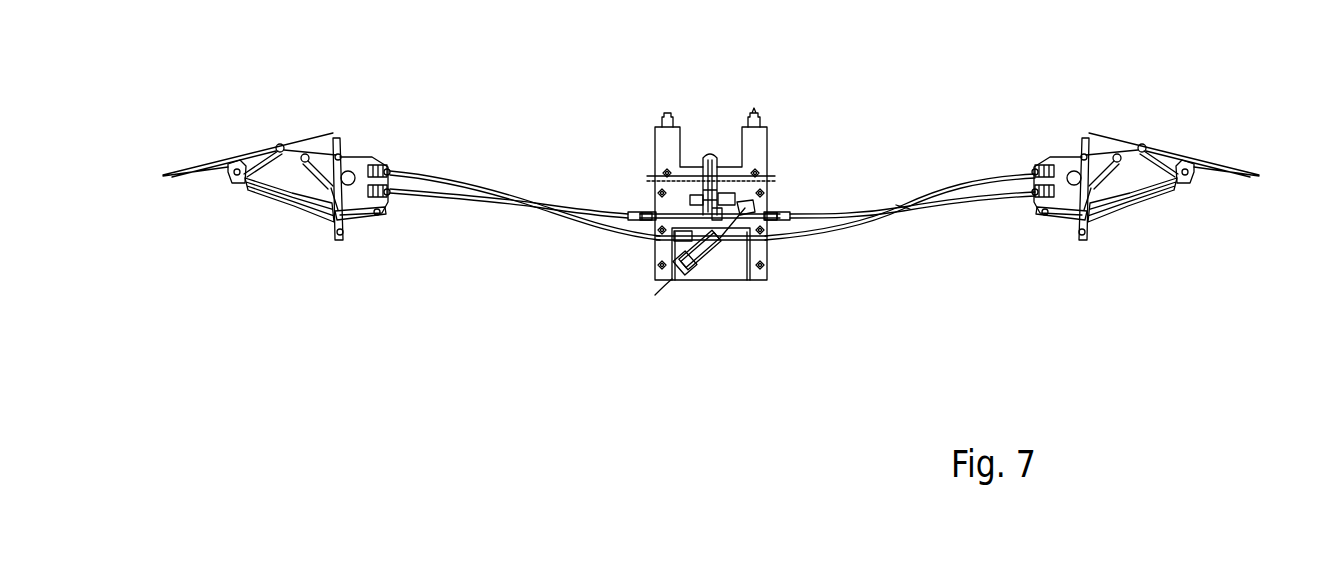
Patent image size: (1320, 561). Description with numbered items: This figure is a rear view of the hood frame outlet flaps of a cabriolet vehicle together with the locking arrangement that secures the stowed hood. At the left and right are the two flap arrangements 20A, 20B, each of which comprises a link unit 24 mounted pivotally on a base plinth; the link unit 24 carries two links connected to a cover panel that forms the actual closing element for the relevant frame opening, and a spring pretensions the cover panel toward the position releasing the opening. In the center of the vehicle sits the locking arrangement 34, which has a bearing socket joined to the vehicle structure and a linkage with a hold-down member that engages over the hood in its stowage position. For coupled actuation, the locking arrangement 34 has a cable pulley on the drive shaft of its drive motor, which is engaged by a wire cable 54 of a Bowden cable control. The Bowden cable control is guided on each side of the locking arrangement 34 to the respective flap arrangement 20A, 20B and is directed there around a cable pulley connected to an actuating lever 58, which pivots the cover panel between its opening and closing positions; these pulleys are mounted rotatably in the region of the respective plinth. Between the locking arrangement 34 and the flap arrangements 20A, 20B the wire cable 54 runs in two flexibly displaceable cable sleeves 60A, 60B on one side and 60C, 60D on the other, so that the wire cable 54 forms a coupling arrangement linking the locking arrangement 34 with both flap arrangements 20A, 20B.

The flap arrangement 20A is at (190, 168).
The flap arrangement 20B is at (1218, 168).
The link unit 24 is at (275, 202).
The locking arrangement 34 is at (733, 281).
The wire cable 54 is at (903, 208).
The actuating lever 58 is at (332, 139).
The cable sleeve 60A is at (603, 229).
The cable sleeve 60B is at (577, 211).
The cable sleeve 60C is at (987, 201).
The cable sleeve 60D is at (980, 179).